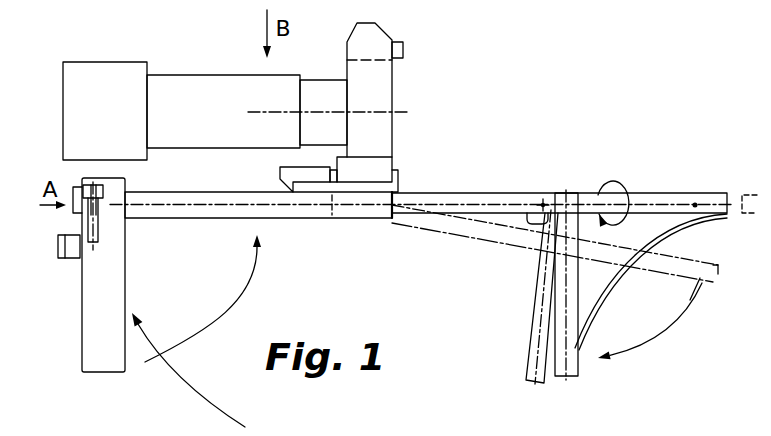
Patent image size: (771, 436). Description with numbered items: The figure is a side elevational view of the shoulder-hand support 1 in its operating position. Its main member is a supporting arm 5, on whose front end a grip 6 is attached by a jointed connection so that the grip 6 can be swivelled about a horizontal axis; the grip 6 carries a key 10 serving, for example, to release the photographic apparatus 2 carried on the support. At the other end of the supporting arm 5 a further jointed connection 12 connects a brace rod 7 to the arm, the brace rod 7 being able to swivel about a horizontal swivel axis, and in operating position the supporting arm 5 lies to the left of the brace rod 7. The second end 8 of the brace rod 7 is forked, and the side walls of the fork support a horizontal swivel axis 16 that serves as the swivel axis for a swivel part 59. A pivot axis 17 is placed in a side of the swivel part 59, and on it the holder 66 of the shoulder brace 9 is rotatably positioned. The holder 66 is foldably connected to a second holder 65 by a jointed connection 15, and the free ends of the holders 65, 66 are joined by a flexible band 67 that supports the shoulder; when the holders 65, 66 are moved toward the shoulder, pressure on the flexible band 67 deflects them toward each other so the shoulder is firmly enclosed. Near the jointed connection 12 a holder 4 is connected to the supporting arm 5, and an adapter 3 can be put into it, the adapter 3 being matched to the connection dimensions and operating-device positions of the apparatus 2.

The shoulder-hand support 1 is at (323, 242).
The photographic apparatus 2 is at (380, 88).
The adapter 3 is at (378, 170).
The holder 4 is at (320, 179).
The supporting arm 5 is at (207, 219).
The grip 6 is at (102, 306).
The brace rod 7 is at (457, 200).
The second end 8 is at (546, 181).
The shoulder brace 9 is at (638, 156).
The key 10 is at (58, 246).
The jointed connection 12 is at (337, 214).
The jointed connection 15 is at (583, 175).
The horizontal swivel axis 16 is at (530, 213).
The pivot axis 17 is at (696, 206).
The swivel part 59 is at (543, 221).
The second holder 65 is at (668, 194).
The holder 66 is at (563, 338).
The flexible band 67 is at (617, 270).